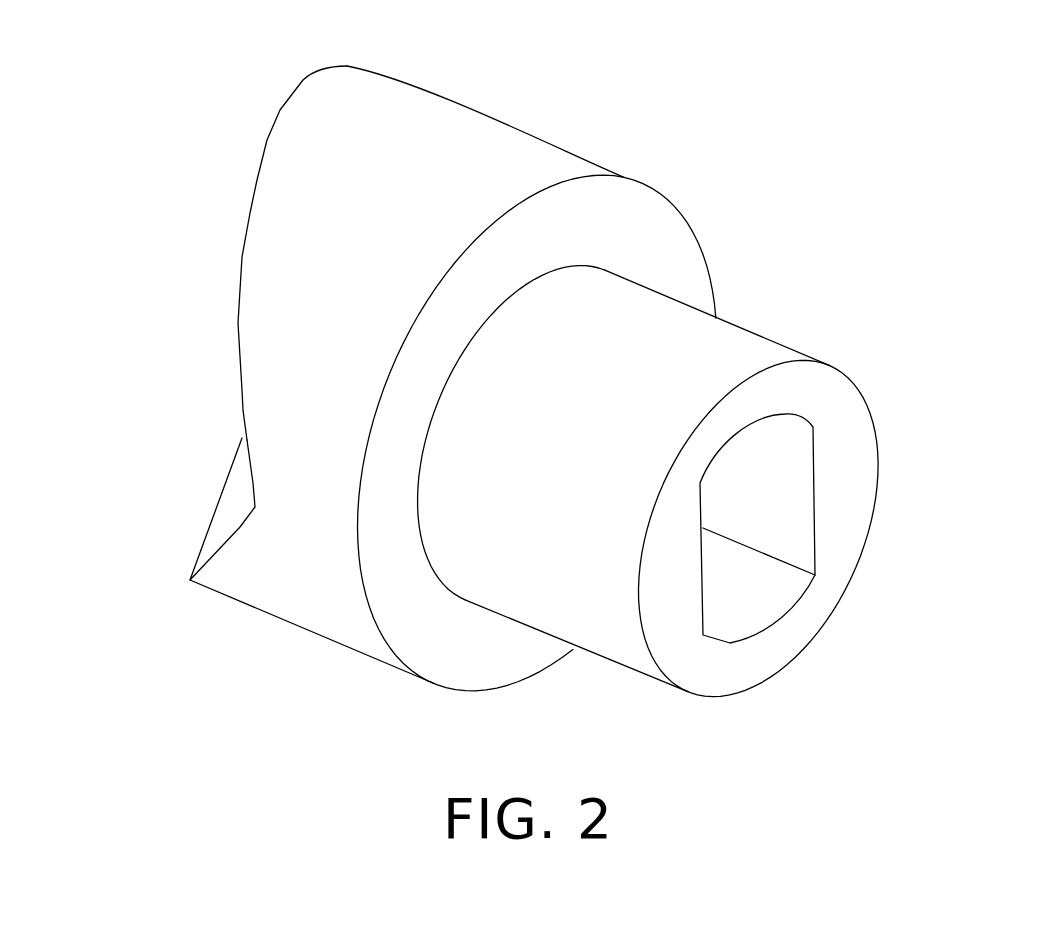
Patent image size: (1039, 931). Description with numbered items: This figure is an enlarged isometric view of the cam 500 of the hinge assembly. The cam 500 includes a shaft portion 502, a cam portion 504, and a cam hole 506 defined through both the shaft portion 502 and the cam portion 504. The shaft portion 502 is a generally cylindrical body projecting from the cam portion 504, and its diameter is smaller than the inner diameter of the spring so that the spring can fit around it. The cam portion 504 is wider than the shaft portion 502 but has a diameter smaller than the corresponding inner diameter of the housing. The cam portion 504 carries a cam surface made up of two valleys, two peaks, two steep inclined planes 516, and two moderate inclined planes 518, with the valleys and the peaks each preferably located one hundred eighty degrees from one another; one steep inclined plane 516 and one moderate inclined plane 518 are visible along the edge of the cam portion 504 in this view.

The cam 500 is at (450, 80).
The shaft portion 502 is at (687, 373).
The cam portion 504 is at (490, 170).
The cam hole 506 is at (763, 490).
The steep inclined plane 516 is at (237, 497).
The moderate inclined plane 518 is at (243, 257).